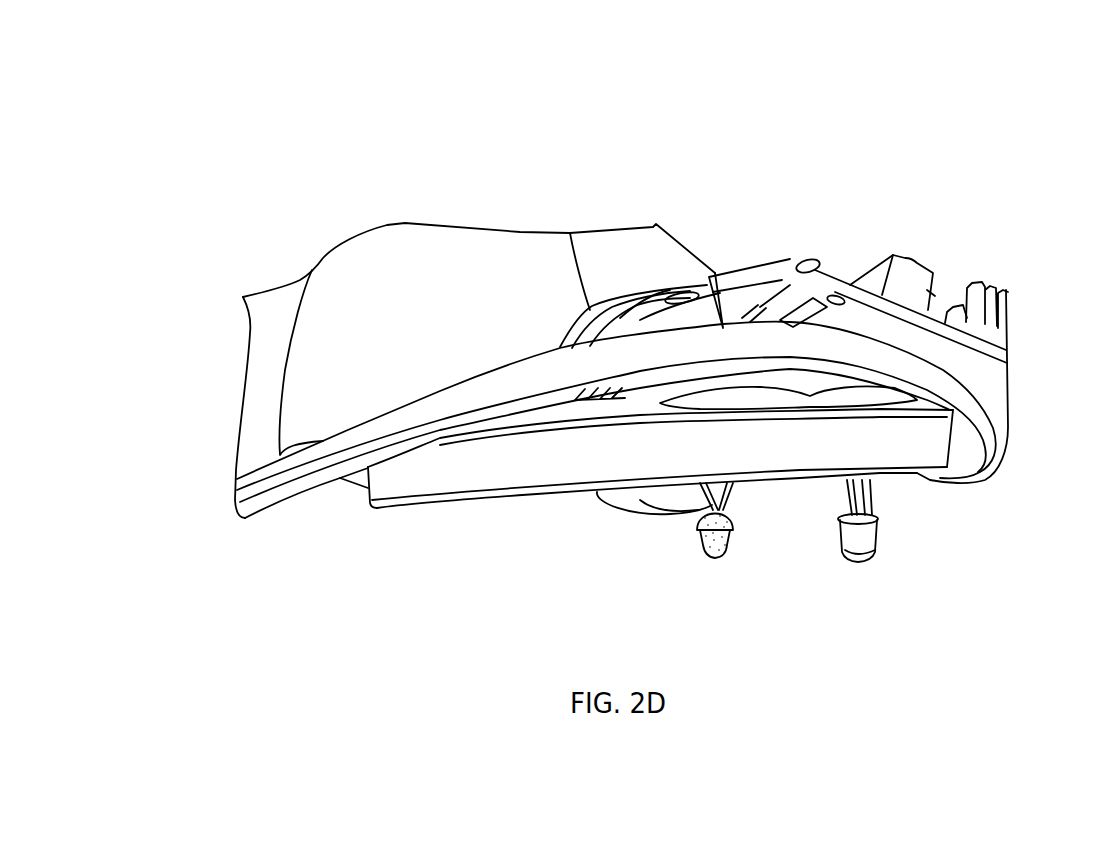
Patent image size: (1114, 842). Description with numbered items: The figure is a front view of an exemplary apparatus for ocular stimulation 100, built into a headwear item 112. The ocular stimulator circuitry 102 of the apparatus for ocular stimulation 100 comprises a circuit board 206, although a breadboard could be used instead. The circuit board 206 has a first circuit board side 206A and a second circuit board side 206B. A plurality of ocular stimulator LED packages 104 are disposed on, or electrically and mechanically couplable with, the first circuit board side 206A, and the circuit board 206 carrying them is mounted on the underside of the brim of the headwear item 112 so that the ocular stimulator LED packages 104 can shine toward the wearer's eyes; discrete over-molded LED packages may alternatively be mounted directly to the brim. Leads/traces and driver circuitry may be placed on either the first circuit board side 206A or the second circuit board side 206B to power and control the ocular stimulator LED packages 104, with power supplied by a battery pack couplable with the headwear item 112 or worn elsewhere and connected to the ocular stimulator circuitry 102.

The apparatus for ocular stimulation 100 is at (274, 236).
The ocular stimulator circuitry 102 is at (1012, 302).
The ocular stimulator LED packages 104 is at (893, 572).
The headwear item 112 is at (227, 463).
The circuit board 206 is at (493, 508).
The first circuit board side 206A is at (440, 507).
The second circuit board side 206B is at (523, 422).